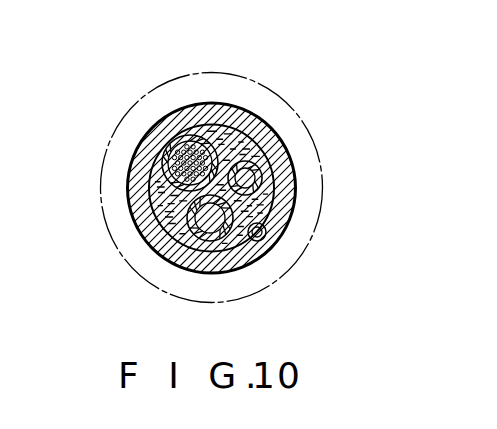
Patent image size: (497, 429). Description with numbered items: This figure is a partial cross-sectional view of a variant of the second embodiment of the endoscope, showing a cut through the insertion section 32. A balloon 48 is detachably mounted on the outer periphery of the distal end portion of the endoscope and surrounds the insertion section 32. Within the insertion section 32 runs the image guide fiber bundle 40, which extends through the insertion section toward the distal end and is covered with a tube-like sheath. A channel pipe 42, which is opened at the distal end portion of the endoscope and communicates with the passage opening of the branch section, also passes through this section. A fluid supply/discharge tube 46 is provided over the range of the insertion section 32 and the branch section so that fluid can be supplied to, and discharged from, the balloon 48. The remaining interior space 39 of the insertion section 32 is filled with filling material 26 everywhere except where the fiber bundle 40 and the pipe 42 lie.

The balloon 48 is at (276, 92).
The filling material 26 is at (137, 224).
The insertion section 32 is at (297, 203).
The image guide fiber bundle 40 is at (173, 160).
The fluid supply/discharge tube 46 is at (262, 173).
The channel pipe 42 is at (194, 236).
The space 39 is at (252, 239).